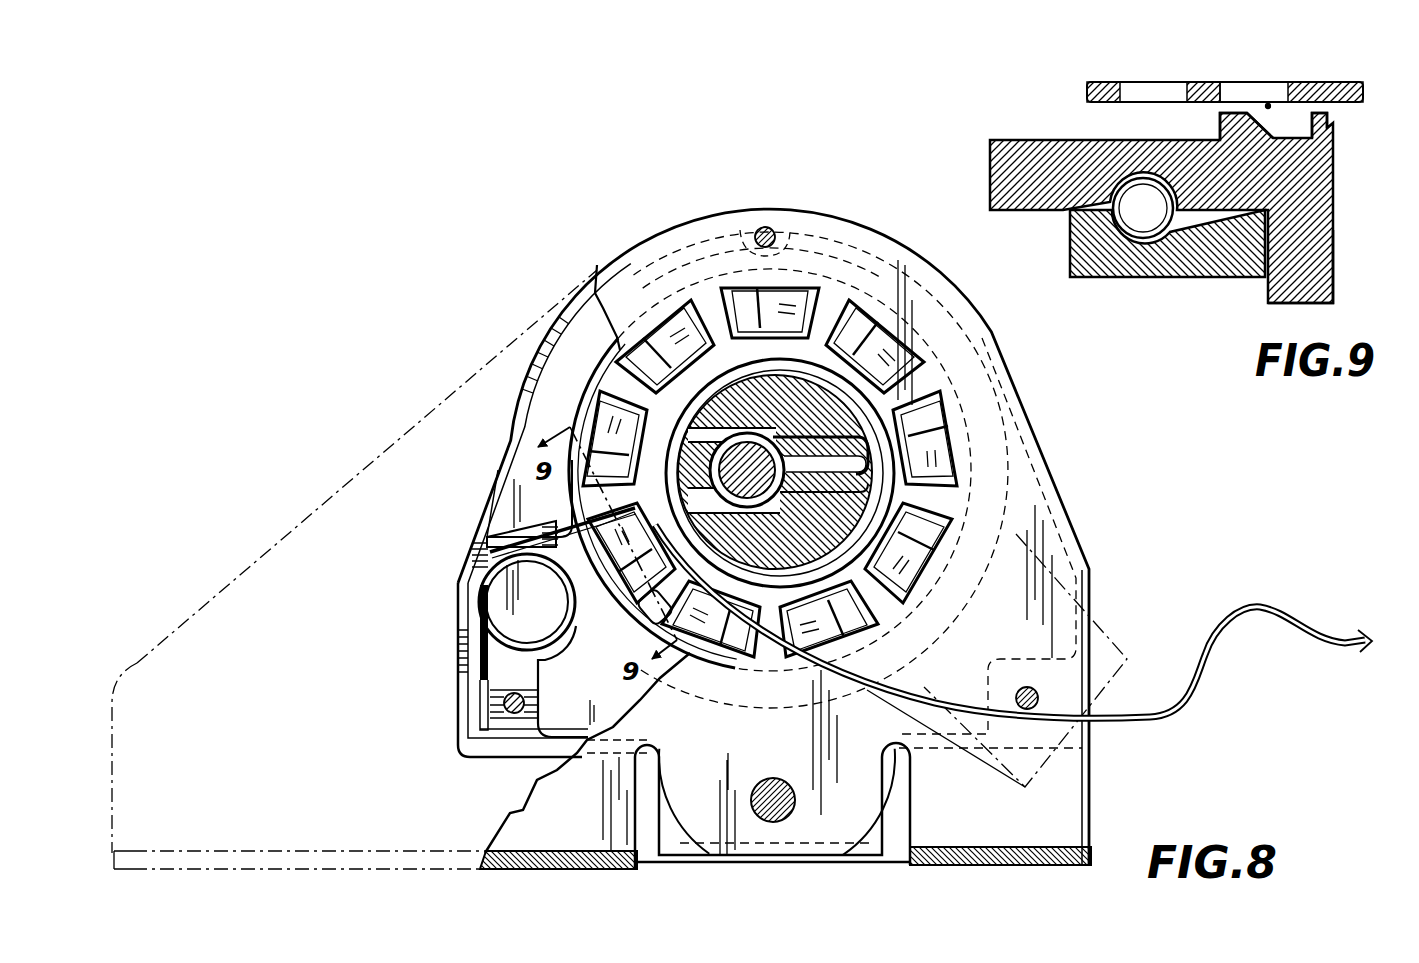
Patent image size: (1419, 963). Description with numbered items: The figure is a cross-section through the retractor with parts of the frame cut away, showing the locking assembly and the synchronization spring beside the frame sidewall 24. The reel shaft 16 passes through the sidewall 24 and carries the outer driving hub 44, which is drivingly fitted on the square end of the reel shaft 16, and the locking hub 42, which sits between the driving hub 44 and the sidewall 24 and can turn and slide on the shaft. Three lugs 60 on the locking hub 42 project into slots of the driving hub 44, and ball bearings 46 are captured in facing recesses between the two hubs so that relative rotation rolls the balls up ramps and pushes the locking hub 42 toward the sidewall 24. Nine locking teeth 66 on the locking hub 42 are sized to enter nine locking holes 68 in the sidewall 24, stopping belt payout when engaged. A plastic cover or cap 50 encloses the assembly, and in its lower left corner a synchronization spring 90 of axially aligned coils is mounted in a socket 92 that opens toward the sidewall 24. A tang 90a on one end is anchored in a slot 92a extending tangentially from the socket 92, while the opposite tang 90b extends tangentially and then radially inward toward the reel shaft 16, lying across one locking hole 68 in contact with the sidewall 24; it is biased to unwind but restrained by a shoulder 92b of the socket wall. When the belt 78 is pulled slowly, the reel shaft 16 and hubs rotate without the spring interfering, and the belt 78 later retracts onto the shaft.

In FIG. 8, the reel shaft 16 is at (738, 446).
In FIG. 8, the sidewall 24 is at (1020, 484).
In FIG. 9, the sidewall 24 is at (1350, 82).
In FIG. 9, the locking hub 42 is at (1335, 182).
In FIG. 9, the outer driving hub 44 is at (1213, 268).
In FIG. 9, the ball bearings 46 is at (1128, 216).
In FIG. 8, the cover or cap 50 is at (465, 728).
In FIG. 9, the lugs 60 is at (1335, 283).
In FIG. 9, the locking teeth 66 is at (1220, 118).
In FIG. 9, the locking holes 68 is at (1227, 72).
In FIG. 8, the belt 78 is at (1302, 623).
In FIG. 8, the synchronization spring 90 is at (462, 573).
In FIG. 8, the tang 90a is at (470, 657).
In FIG. 8, the tang 90b is at (598, 514).
In FIG. 9, the tang 90b is at (1268, 104).
In FIG. 8, the socket 92 is at (505, 603).
In FIG. 8, the slot 92a is at (482, 695).
In FIG. 8, the shoulder 92b is at (498, 548).